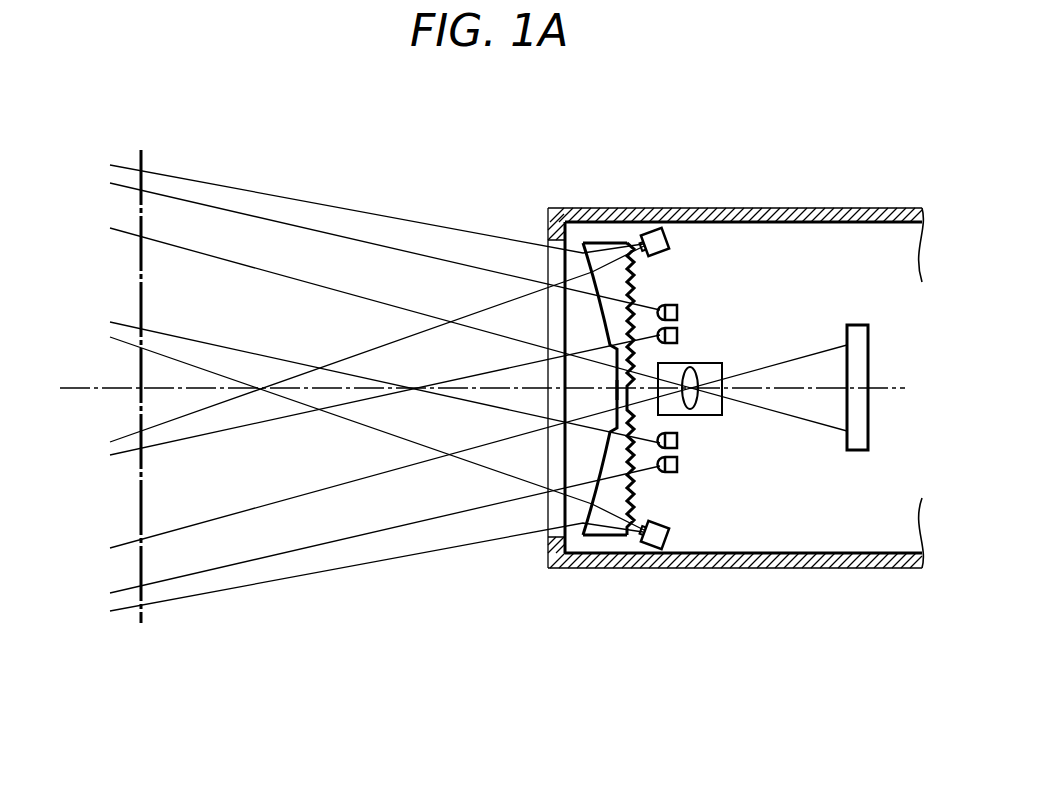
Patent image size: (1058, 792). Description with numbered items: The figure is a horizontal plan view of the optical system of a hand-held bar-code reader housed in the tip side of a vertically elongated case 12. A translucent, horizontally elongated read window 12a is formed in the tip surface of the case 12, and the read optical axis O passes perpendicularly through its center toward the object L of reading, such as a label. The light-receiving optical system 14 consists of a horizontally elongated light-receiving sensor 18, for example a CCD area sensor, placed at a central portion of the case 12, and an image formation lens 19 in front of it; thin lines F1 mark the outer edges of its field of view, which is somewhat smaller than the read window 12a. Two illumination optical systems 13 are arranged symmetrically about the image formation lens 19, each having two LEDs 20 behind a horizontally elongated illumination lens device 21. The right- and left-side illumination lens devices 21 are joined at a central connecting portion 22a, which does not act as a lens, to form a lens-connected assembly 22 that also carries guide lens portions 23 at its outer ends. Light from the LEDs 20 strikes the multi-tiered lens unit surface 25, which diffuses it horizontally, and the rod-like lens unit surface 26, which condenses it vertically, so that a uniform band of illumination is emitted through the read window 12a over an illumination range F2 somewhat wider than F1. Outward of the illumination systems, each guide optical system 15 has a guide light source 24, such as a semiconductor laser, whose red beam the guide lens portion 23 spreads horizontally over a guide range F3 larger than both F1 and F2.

The case 12 is at (783, 208).
The read window 12a is at (546, 257).
The illumination optical system 13 is at (703, 280).
The light-receiving optical system 14 is at (749, 353).
The guide optical system 15 is at (618, 236).
The light-receiving sensor 18 is at (866, 408).
The image formation lens 19 is at (732, 418).
The LED 20 is at (687, 313).
The illumination lens device 21 is at (637, 278).
The lens-connected assembly 22 is at (609, 387).
The connecting portion 22a is at (605, 407).
The guide lens portion 23 is at (597, 242).
The guide light source 24 is at (656, 232).
The multi-tiered lens unit surface 25 is at (637, 330).
The rod-like lens unit surface 26 is at (563, 316).
The object of reading L is at (146, 157).
The field of view F1 is at (242, 265).
The illumination range F2 is at (300, 222).
The guide light illumination range F3 is at (366, 209).
The read optical axis O is at (75, 392).